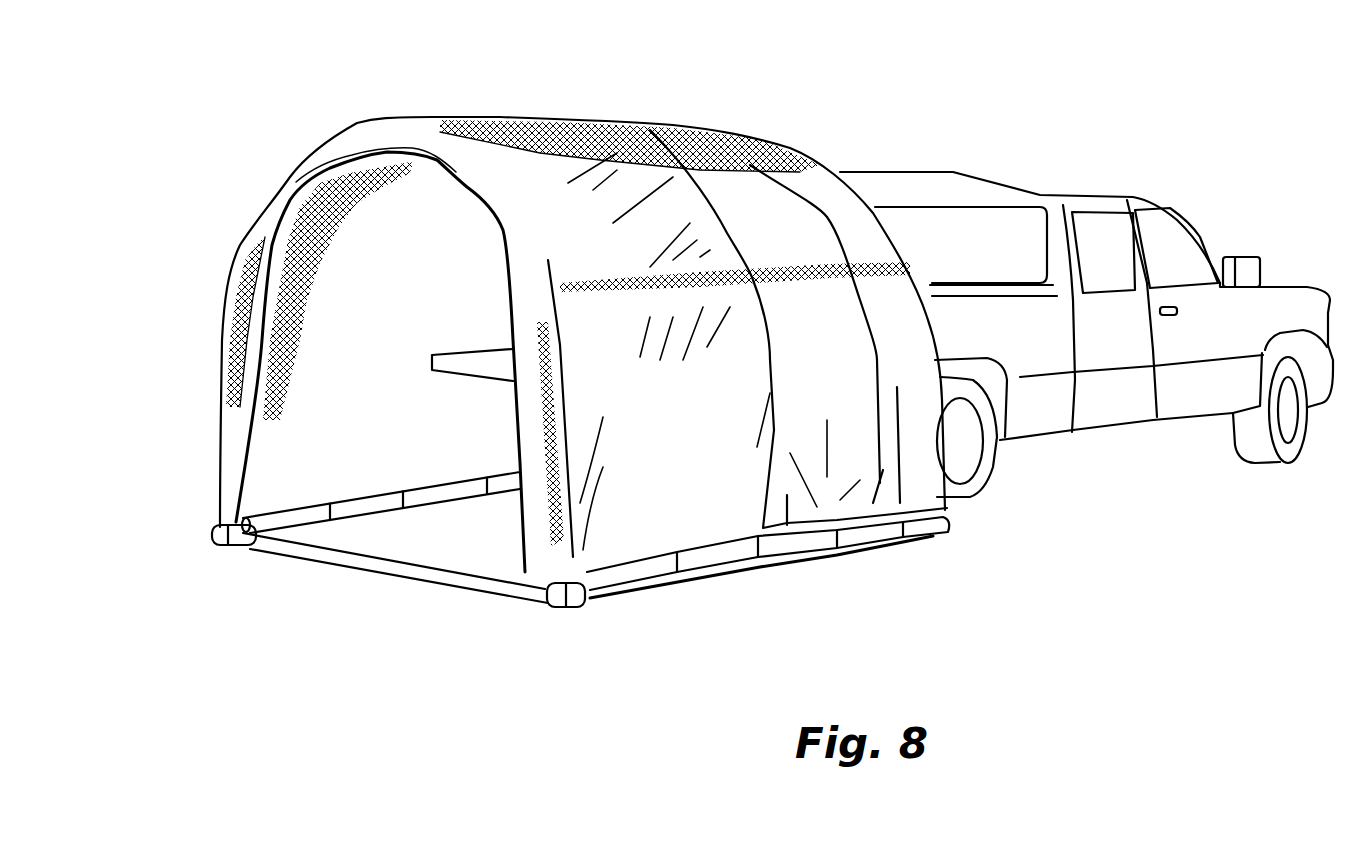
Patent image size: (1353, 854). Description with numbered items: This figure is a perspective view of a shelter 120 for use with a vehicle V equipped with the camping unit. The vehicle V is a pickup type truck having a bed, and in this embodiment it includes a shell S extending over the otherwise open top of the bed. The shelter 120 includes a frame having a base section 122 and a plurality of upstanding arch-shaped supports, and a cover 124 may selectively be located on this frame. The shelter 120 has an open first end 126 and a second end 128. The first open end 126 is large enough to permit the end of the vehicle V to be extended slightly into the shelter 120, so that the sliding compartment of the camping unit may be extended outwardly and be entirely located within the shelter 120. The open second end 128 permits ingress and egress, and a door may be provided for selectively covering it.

The shelter 120 is at (568, 100).
The base section 122 is at (623, 593).
The cover 124 is at (355, 135).
The first end 126 is at (815, 151).
The second end 128 is at (267, 472).
The shell S is at (988, 190).
The vehicle V is at (1183, 200).